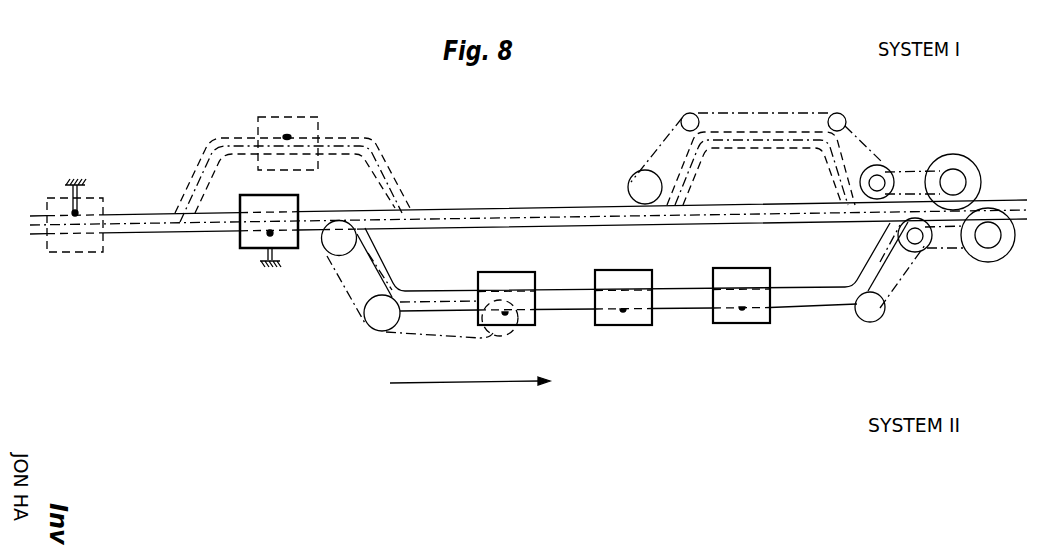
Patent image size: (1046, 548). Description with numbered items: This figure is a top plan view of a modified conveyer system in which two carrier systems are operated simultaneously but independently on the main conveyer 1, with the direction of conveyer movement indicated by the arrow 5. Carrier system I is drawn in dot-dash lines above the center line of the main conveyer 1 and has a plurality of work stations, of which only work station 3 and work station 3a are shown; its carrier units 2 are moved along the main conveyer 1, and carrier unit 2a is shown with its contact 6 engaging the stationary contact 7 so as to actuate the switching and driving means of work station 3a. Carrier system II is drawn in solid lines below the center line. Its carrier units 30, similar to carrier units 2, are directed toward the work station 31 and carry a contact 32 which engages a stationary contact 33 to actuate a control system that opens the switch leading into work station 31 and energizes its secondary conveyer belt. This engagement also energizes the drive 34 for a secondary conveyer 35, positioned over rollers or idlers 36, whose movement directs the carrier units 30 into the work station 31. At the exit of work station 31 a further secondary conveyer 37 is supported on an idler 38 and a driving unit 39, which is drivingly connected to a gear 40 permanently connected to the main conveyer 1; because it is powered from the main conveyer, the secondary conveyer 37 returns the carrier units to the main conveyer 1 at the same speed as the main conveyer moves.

The main conveyer 1 is at (465, 210).
The carrier units 2 is at (315, 117).
The carrier unit 2a is at (105, 198).
The work station 3 is at (838, 154).
The work station 3a is at (377, 156).
The direction of conveyer movement 5 is at (465, 381).
The contact 6 is at (78, 211).
The stationary contact 7 is at (72, 211).
The carrier units 30 is at (240, 249).
The work station 31 is at (568, 300).
The contact 32 is at (268, 236).
The stationary contact 33 is at (279, 259).
The drive 34 is at (331, 244).
The secondary conveyer 35 is at (348, 298).
The rollers or idlers 36 is at (381, 327).
The secondary conveyer 37 is at (905, 285).
The idler 38 is at (872, 322).
The driving unit 39 is at (924, 245).
The gear 40 is at (993, 263).